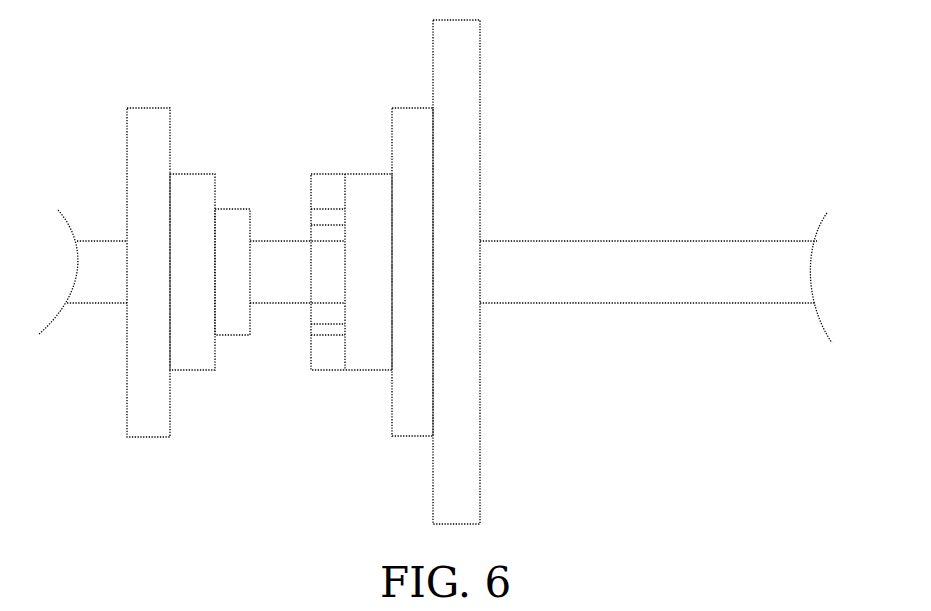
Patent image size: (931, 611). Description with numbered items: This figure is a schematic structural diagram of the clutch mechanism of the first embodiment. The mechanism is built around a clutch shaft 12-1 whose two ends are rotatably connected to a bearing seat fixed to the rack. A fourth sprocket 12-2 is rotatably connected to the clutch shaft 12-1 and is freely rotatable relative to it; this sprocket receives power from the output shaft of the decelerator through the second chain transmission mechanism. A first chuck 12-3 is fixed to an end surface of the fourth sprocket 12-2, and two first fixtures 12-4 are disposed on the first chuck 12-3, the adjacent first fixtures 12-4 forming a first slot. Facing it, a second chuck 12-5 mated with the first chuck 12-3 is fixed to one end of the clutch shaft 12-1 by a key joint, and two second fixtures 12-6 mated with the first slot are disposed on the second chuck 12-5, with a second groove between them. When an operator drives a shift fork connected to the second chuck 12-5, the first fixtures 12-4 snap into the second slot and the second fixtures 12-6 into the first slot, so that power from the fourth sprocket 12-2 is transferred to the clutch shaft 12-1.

The clutch shaft 12-1 is at (592, 263).
The fourth sprocket 12-2 is at (460, 73).
The first chuck 12-3 is at (409, 138).
The first fixture 12-4 is at (325, 182).
The second chuck 12-5 is at (157, 153).
The second fixture 12-6 is at (233, 218).